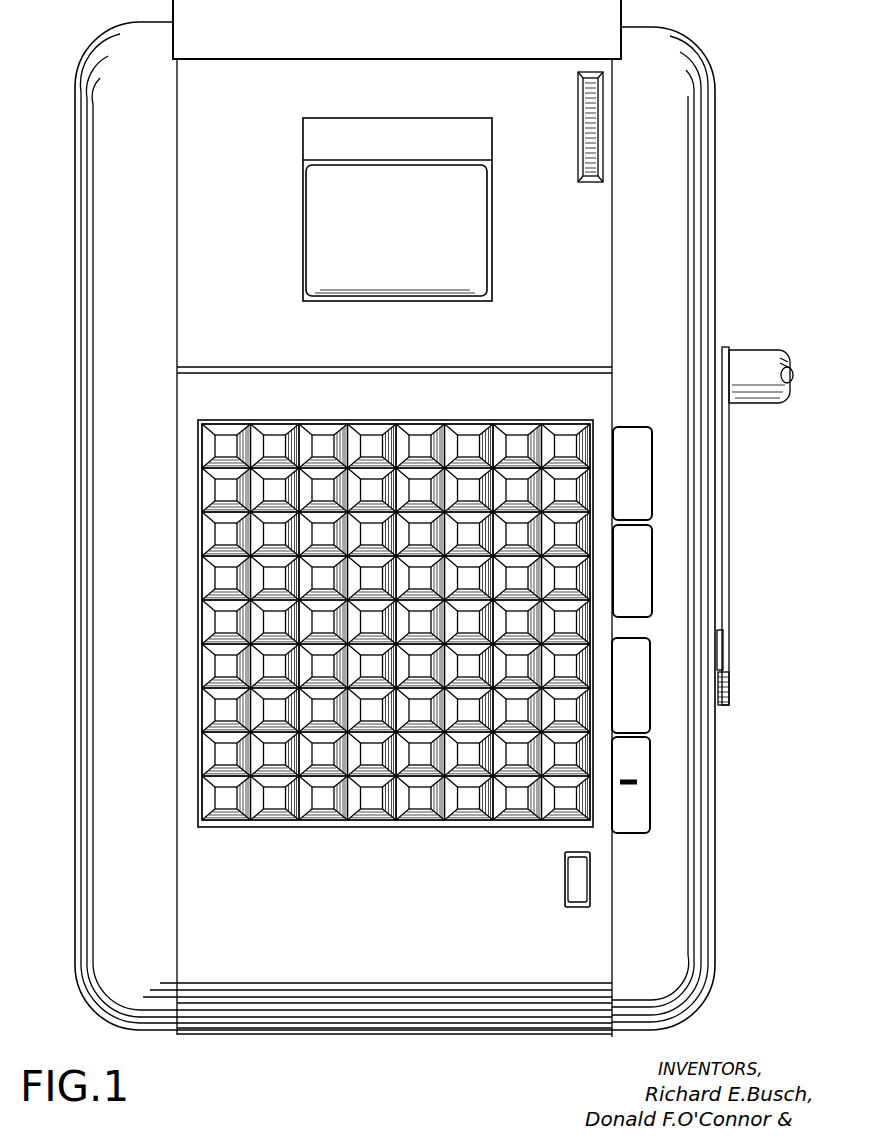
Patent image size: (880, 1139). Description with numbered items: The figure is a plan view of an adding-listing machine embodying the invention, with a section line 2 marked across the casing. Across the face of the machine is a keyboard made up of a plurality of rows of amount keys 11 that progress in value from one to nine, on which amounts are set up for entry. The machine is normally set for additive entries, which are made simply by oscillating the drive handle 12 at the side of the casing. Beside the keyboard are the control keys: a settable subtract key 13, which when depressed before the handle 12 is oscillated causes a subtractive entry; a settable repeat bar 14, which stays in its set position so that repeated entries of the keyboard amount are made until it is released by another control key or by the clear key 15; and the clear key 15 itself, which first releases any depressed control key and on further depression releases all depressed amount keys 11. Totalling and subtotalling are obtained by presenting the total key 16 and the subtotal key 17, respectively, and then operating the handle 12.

The section line 2- 2 is at (495, 75).
The amount keys 11 is at (395, 411).
The drive handle 12 is at (752, 349).
The subtract key 13 is at (637, 771).
The repeat bar 14 is at (640, 707).
The clear key 15 is at (590, 881).
The total key 16 is at (660, 481).
The subtotal key 17 is at (643, 549).